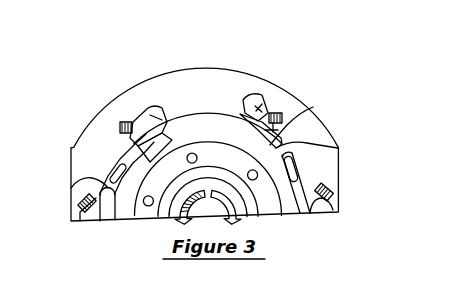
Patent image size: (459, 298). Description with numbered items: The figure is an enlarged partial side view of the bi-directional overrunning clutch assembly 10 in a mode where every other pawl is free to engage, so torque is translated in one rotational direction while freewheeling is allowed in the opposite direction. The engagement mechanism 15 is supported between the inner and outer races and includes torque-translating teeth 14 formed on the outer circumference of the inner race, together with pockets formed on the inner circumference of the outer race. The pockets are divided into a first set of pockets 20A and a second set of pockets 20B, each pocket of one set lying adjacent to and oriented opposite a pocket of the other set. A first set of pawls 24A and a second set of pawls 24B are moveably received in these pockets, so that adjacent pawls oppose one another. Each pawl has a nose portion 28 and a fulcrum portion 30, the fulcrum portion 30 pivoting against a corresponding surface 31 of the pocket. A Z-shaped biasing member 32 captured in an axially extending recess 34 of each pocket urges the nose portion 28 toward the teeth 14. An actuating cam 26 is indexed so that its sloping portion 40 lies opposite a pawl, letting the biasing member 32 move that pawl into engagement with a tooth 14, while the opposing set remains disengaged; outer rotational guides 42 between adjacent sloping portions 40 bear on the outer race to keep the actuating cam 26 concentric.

The clutch assembly 10 is at (180, 52).
The teeth 14 is at (338, 148).
The engagement mechanism 15 is at (230, 102).
The first set of pockets 20A is at (252, 103).
The second set of pockets 20B is at (147, 108).
The first set of pawls 24A is at (258, 107).
The second set of pawls 24B is at (150, 115).
The actuating cam 26 is at (106, 228).
The nose portion 28 is at (313, 107).
The fulcrum portion 30 is at (123, 120).
The surface 31 is at (326, 204).
The biasing member 32 is at (120, 128).
The recess 34 is at (80, 207).
The sloping portion 40 is at (266, 113).
The outer rotational guide 42 is at (71, 187).